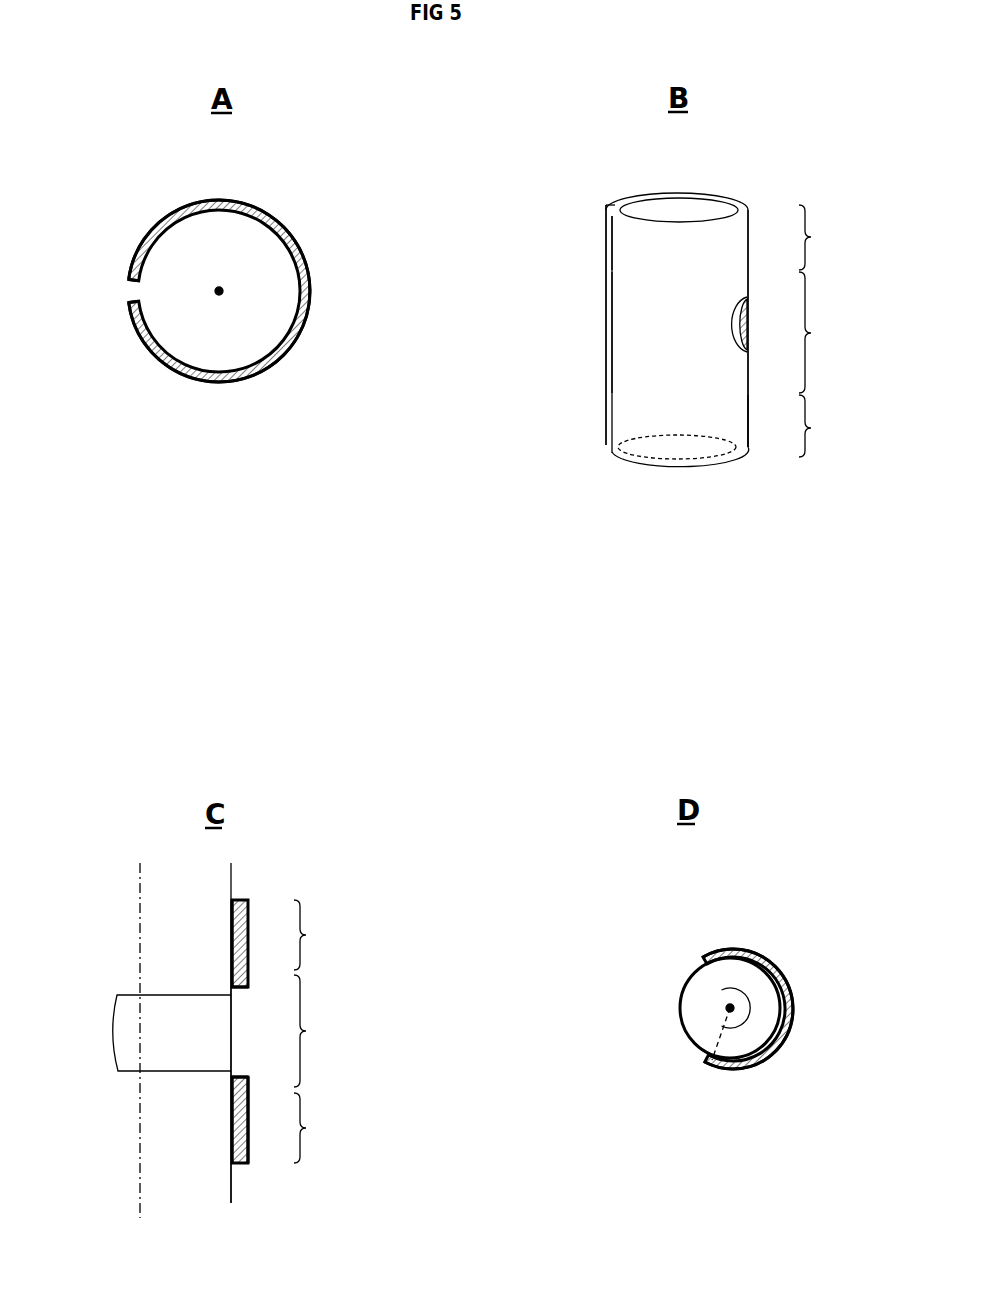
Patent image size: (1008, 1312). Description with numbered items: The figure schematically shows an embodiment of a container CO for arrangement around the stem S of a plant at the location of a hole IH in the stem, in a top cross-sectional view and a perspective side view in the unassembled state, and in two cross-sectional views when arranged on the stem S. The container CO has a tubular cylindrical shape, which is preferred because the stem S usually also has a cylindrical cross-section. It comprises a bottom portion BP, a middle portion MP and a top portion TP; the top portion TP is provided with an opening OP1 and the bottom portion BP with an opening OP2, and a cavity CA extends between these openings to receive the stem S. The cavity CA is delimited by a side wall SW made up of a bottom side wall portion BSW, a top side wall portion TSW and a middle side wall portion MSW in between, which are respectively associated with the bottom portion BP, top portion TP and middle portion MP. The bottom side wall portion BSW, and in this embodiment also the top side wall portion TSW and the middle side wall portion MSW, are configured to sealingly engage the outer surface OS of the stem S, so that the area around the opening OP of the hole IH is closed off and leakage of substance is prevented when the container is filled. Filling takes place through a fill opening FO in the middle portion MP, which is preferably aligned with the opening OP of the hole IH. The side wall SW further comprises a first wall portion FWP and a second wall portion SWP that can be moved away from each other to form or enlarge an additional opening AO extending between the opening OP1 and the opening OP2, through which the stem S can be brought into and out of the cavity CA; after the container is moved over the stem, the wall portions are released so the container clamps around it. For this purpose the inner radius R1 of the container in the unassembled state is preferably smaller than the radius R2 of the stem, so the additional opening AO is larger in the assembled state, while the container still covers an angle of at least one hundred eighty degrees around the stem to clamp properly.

In FIG. 5A, the container CO is at (307, 260).
In FIG. 5B, the container CO is at (735, 247).
In FIG. 5C, the container CO is at (248, 910).
In FIG. 5D, the container CO is at (776, 971).
In FIG. 5A, the side wall SW is at (285, 343).
In FIG. 5B, the side wall SW is at (715, 196).
In FIG. 5C, the side wall SW is at (248, 1152).
In FIG. 5D, the side wall SW is at (783, 1040).
In FIG. 5A, the first wall portion FWP is at (172, 218).
In FIG. 5B, the first wall portion FWP is at (605, 257).
In FIG. 5D, the first wall portion FWP is at (715, 950).
In FIG. 5A, the second wall portion SWP is at (138, 337).
In FIG. 5B, the second wall portion SWP is at (622, 393).
In FIG. 5D, the second wall portion SWP is at (717, 1070).
In FIG. 5A, the additional opening AO is at (123, 285).
In FIG. 5B, the additional opening AO is at (605, 295).
In FIG. 5A, the inner radius R1 is at (261, 228).
In FIG. 5D, the radius of the stem R2 is at (707, 968).
In FIG. 5A, the cavity CA is at (207, 335).
In FIG. 5B, the cavity CA is at (650, 213).
In FIG. 5B, the opening in the top portion OP1 is at (682, 208).
In FIG. 5B, the opening in the bottom portion OP2 is at (672, 468).
In FIG. 5B, the top side wall portion TSW is at (617, 235).
In FIG. 5C, the top side wall portion TSW is at (232, 922).
In FIG. 5B, the middle side wall portion MSW is at (617, 328).
In FIG. 5B, the bottom side wall portion BSW is at (738, 425).
In FIG. 5C, the bottom side wall portion BSW is at (230, 1130).
In FIG. 5B, the fill opening FO is at (749, 323).
In FIG. 5C, the fill opening FO is at (245, 1032).
In FIG. 5B, the top portion TP is at (822, 237).
In FIG. 5C, the top portion TP is at (316, 935).
In FIG. 5B, the middle portion MP is at (824, 332).
In FIG. 5C, the middle portion MP is at (318, 1031).
In FIG. 5B, the bottom portion BP is at (823, 426).
In FIG. 5C, the bottom portion BP is at (317, 1128).
In FIG. 5C, the stem S is at (180, 887).
In FIG. 5D, the stem S is at (708, 1039).
In FIG. 5C, the longitudinal axis LA is at (140, 1153).
In FIG. 5C, the hole IH is at (158, 1032).
In FIG. 5C, the opening of the hole OP is at (227, 1040).
In FIG. 5C, the outer surface OS is at (235, 1185).